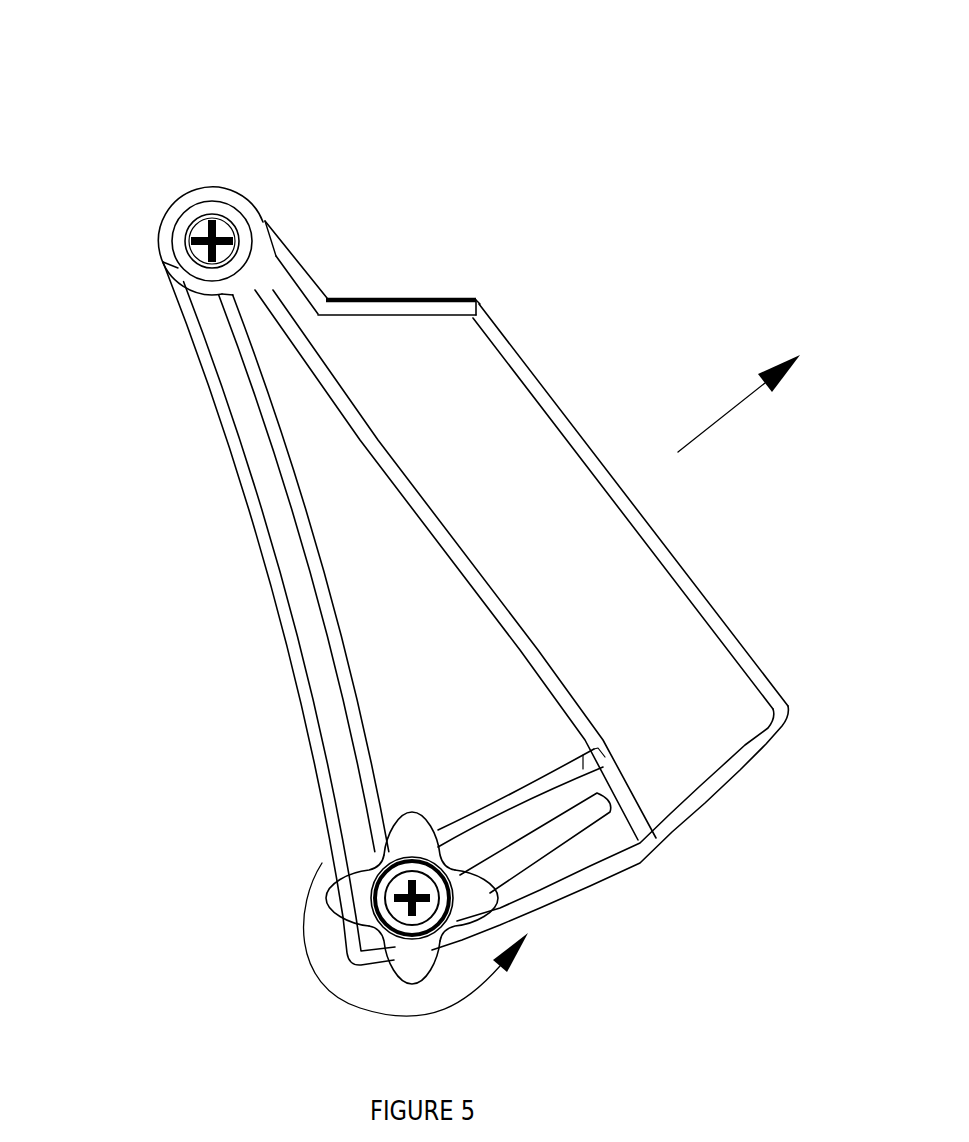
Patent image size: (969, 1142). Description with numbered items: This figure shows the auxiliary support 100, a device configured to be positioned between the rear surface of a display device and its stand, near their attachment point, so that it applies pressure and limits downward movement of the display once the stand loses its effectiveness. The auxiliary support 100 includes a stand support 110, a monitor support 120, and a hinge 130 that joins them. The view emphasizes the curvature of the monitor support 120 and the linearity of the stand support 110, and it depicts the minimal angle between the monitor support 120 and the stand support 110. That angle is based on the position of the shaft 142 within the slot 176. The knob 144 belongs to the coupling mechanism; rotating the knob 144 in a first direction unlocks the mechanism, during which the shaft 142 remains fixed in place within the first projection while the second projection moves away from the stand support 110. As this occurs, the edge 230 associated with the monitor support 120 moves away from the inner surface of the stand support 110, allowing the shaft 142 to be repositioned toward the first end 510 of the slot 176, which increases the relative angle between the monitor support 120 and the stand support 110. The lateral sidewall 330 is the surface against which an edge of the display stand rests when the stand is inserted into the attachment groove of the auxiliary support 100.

The auxiliary support 100 is at (86, 68).
The stand support 110 is at (550, 430).
The monitor support 120 is at (265, 582).
The hinge 130 is at (190, 223).
The shaft 142 is at (384, 876).
The knob 144 is at (470, 900).
The slot 176 is at (550, 845).
The edge 230 is at (627, 790).
The lateral sidewall 330 is at (437, 300).
The first end 510 is at (598, 792).